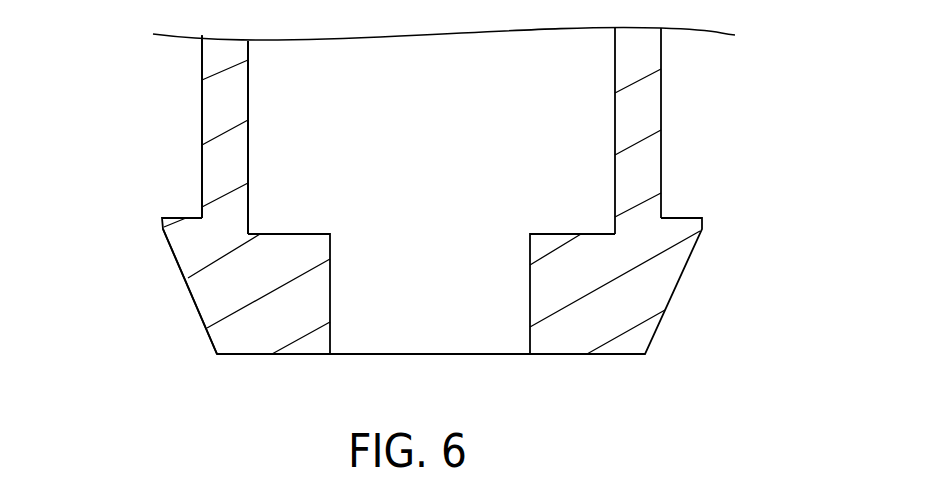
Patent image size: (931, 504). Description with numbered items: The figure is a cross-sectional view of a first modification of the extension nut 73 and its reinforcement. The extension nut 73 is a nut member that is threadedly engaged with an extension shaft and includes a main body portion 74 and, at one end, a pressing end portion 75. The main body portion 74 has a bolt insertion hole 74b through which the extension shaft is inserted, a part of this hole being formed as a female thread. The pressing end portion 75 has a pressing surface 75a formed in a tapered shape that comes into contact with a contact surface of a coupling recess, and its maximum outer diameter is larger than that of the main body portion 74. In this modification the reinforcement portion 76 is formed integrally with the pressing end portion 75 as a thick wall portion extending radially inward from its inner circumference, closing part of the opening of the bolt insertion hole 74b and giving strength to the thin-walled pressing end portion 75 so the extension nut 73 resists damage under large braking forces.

The extension nut 73 is at (661, 116).
The main body portion 74 is at (210, 101).
The bolt insertion hole 74b is at (248, 60).
The pressing end portion 75 is at (196, 249).
The pressing surface 75a is at (195, 318).
The reinforcement portion 76 is at (547, 285).